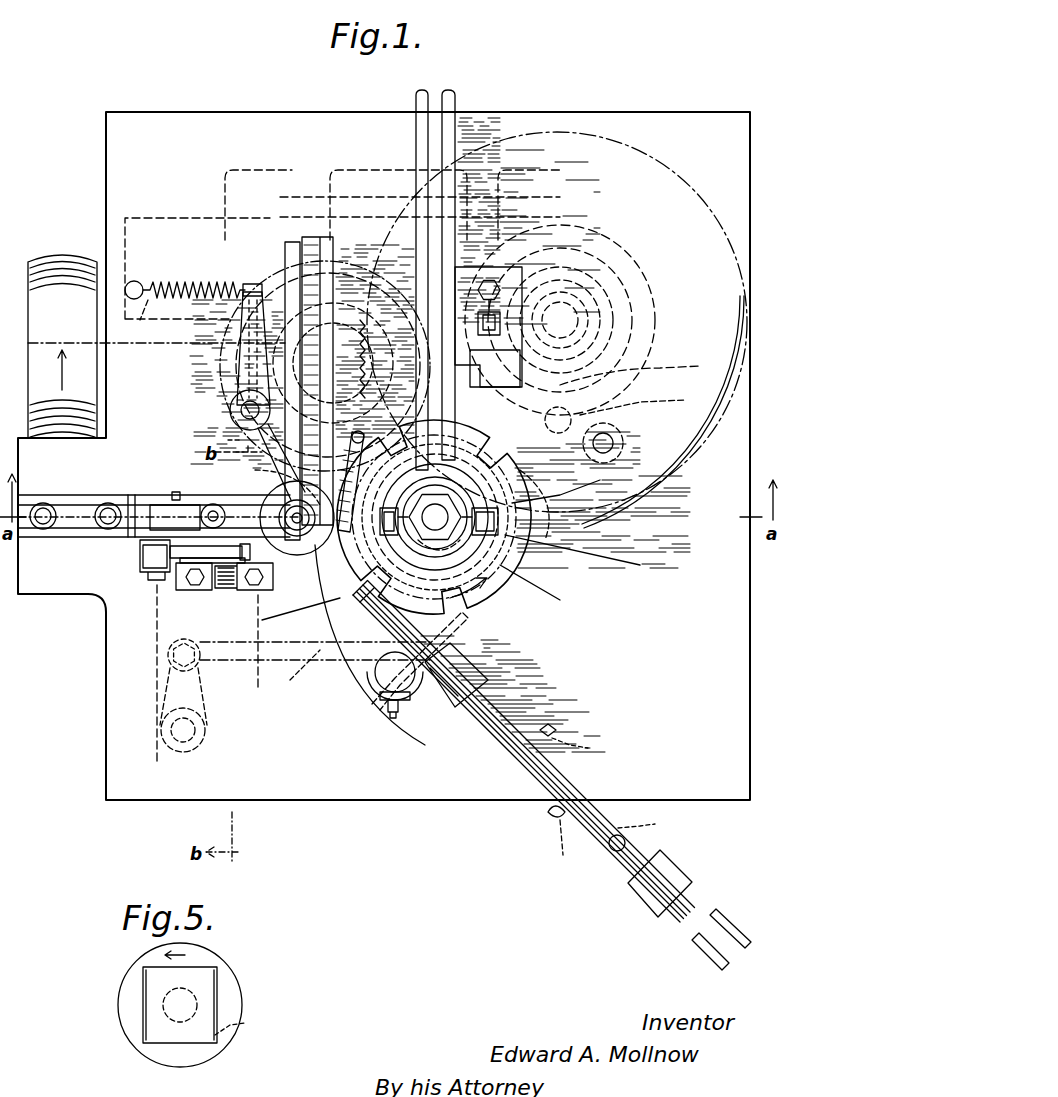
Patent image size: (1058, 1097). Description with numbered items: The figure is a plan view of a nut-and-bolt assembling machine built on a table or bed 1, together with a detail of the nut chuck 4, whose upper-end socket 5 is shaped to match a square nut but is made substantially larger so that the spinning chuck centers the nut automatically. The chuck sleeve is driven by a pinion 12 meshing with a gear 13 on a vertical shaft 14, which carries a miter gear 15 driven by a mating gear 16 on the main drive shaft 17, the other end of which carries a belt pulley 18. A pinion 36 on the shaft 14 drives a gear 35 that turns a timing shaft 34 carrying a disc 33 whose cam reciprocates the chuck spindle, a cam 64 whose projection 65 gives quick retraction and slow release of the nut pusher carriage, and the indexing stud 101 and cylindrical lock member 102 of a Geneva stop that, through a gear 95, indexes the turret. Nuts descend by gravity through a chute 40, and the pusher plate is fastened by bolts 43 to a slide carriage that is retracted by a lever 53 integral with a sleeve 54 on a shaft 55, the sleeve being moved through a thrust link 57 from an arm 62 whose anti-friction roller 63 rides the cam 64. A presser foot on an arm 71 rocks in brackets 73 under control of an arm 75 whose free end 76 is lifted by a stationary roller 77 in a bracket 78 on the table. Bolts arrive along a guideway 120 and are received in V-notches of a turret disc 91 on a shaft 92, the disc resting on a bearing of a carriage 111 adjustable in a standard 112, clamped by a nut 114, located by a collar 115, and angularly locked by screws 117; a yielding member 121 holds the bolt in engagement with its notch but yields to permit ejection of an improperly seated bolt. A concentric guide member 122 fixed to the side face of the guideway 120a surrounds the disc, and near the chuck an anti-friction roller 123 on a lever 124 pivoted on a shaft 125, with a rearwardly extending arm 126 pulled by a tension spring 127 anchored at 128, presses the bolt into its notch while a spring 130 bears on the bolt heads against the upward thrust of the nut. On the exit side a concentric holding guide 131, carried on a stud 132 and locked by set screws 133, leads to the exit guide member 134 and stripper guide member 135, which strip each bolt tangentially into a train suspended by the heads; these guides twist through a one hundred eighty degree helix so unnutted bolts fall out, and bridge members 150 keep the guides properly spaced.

In FIG. 1, the table or bed 1 is at (640, 126).
In FIG. 5, the nut chuck 4 is at (128, 1015).
In FIG. 1, the socket 5 is at (297, 522).
In FIG. 5, the socket 5 is at (143, 975).
In FIG. 1, the pinion 12 is at (370, 645).
In FIG. 1, the gear 13 is at (303, 252).
In FIG. 1, the vertical shaft 14 is at (368, 330).
In FIG. 1, the miter gear 15 is at (350, 300).
In FIG. 1, the mating gear 16 is at (261, 342).
In FIG. 1, the main drive shaft 17 is at (153, 309).
In FIG. 1, the pulley 18 is at (50, 258).
In FIG. 1, the disc 33 is at (566, 245).
In FIG. 1, the shaft 34 is at (630, 280).
In FIG. 1, the gear 35 is at (648, 160).
In FIG. 1, the pinion 36 is at (388, 354).
In FIG. 1, the chute 40 is at (291, 244).
In FIG. 1, the bolts 43 is at (45, 505).
In FIG. 1, the lever 53 is at (168, 618).
In FIG. 1, the sleeve 54 is at (205, 735).
In FIG. 1, the shaft 55 is at (200, 688).
In FIG. 1, the thrust link 57 is at (300, 679).
In FIG. 1, the arm 62 is at (585, 492).
In FIG. 1, the anti-friction roller 63 is at (615, 452).
In FIG. 1, the cam 64 is at (655, 338).
In FIG. 1, the cam projection 65 is at (641, 401).
In FIG. 1, the arm 71 is at (178, 504).
In FIG. 1, the brackets 73 is at (138, 495).
In FIG. 1, the arm 75 is at (158, 565).
In FIG. 1, the free end 76 is at (252, 562).
In FIG. 1, the stationary roller 77 is at (250, 552).
In FIG. 1, the bracket 78 is at (197, 592).
In FIG. 1, the turret disc 91 is at (210, 504).
In FIG. 1, the shaft 92 is at (200, 468).
In FIG. 1, the gear 95 is at (527, 489).
In FIG. 1, the indexing stud 101 is at (570, 412).
In FIG. 1, the cylindrical lock member 102 is at (643, 370).
In FIG. 1, the carriage 111 is at (495, 368).
In FIG. 1, the standard 112 is at (500, 270).
In FIG. 1, the nut 114 is at (453, 497).
In FIG. 1, the collar 115 is at (435, 517).
In FIG. 1, the screws 117 is at (508, 548).
In FIG. 1, the bolt supplying guideway 120 is at (455, 102).
In FIG. 1, the guideway 120a is at (428, 102).
In FIG. 1, the pin 121 is at (377, 438).
In FIG. 1, the concentric guide member 122 is at (348, 482).
In FIG. 1, the anti-friction roller 123 is at (269, 480).
In FIG. 1, the lever 124 is at (217, 441).
In FIG. 1, the shaft 125 is at (231, 407).
In FIG. 1, the rearwardly extending arm 126 is at (243, 306).
In FIG. 1, the tension spring 127 is at (212, 292).
In FIG. 1, the anchor 128 is at (137, 282).
In FIG. 1, the spring 130 is at (420, 504).
In FIG. 1, the concentric holding guide 131 is at (338, 600).
In FIG. 1, the stud 132 is at (390, 680).
In FIG. 1, the set screws 133 is at (402, 710).
In FIG. 1, the exit guide member 134 is at (392, 672).
In FIG. 1, the stripper guide member 135 is at (470, 648).
In FIG. 1, the bridge members 150 is at (475, 690).